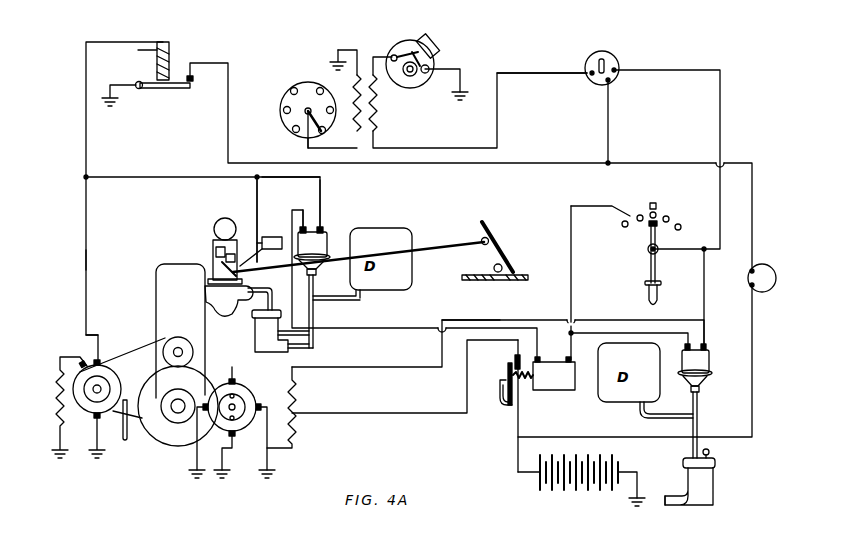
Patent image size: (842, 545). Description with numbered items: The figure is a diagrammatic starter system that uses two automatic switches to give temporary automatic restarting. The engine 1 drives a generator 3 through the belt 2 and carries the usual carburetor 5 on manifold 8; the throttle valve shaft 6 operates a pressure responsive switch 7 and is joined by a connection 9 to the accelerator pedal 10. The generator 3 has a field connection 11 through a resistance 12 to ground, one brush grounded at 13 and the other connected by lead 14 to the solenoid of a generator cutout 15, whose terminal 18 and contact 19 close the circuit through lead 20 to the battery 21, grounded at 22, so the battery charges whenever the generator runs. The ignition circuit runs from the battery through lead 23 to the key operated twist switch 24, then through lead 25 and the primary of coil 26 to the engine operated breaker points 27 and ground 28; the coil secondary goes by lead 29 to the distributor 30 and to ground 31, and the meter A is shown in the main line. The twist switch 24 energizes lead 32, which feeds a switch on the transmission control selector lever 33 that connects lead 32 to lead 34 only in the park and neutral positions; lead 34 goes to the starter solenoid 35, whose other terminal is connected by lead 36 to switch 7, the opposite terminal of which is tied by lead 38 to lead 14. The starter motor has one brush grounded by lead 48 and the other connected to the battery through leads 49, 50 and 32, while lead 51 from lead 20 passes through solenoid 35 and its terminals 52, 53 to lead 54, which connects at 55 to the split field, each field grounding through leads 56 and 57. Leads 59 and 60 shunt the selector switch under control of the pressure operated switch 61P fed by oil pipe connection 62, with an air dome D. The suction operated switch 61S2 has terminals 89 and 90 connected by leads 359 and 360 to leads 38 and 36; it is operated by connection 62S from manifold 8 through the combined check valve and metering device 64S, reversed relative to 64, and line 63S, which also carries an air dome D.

The engine 1 is at (156, 303).
The belt 2 is at (150, 352).
The generator 3 is at (105, 366).
The carburetor 5 is at (212, 242).
The throttle valve shaft 6 is at (225, 262).
The pressure responsive switch 7 is at (215, 250).
The manifold 8 is at (212, 300).
The connection 9 is at (470, 238).
The accelerator pedal 10 is at (494, 226).
The field connection 11 is at (70, 352).
The resistance 12 is at (58, 404).
The ground 13 is at (105, 452).
The lead 14 is at (88, 262).
The generator cutout 15 is at (165, 88).
The terminal 18 is at (190, 88).
The contact 19 is at (194, 80).
The lead 20 is at (229, 136).
The battery 21 is at (582, 494).
The ground 22 is at (632, 496).
The lead 23 is at (608, 143).
The twist switch 24 is at (618, 58).
The lead 25 is at (512, 68).
The coil 26 is at (380, 114).
The breaker points 27 is at (400, 44).
The ground 28 is at (446, 98).
The lead 29 is at (304, 148).
The distributor 30 is at (314, 78).
The ground 31 is at (344, 38).
The lead 32 is at (720, 116).
The transmission control selector lever 33 is at (648, 266).
The lead 34 is at (632, 212).
The starter solenoid 35 is at (575, 392).
The lead 36 is at (464, 320).
The lead 38 is at (257, 194).
The lead 48 is at (225, 478).
The lead 49 is at (250, 364).
The lead 50 is at (704, 309).
The lead 51 is at (518, 426).
The terminal 52 is at (520, 400).
The terminal 53 is at (513, 352).
The lead 54 is at (418, 413).
The split field connection 55 is at (292, 422).
The lead 56 is at (195, 460).
The lead 57 is at (272, 462).
The lead 59 is at (704, 336).
The lead 60 is at (596, 334).
The pressure operated switch 61P is at (715, 365).
The suction operated switch 61S2 is at (326, 232).
The oil pipe connection 62 is at (670, 505).
The connection 62S is at (258, 318).
The line 63S is at (313, 318).
The combined check valve and metering device 64 is at (716, 486).
The combined check valve and metering device 64S is at (313, 342).
The terminal 89 is at (312, 225).
The terminal 90 is at (324, 225).
The lead 359 is at (310, 180).
The lead 360 is at (278, 238).
The ammeter A is at (762, 278).